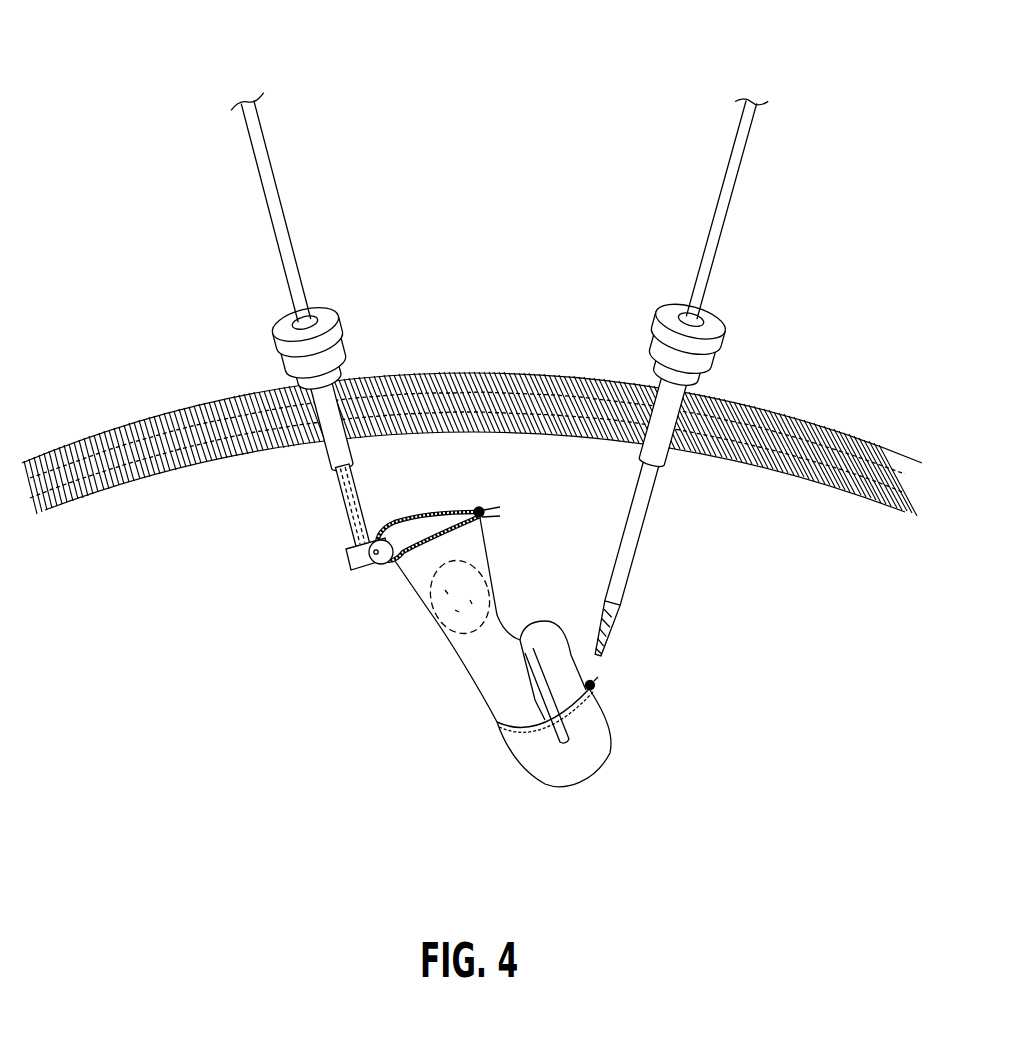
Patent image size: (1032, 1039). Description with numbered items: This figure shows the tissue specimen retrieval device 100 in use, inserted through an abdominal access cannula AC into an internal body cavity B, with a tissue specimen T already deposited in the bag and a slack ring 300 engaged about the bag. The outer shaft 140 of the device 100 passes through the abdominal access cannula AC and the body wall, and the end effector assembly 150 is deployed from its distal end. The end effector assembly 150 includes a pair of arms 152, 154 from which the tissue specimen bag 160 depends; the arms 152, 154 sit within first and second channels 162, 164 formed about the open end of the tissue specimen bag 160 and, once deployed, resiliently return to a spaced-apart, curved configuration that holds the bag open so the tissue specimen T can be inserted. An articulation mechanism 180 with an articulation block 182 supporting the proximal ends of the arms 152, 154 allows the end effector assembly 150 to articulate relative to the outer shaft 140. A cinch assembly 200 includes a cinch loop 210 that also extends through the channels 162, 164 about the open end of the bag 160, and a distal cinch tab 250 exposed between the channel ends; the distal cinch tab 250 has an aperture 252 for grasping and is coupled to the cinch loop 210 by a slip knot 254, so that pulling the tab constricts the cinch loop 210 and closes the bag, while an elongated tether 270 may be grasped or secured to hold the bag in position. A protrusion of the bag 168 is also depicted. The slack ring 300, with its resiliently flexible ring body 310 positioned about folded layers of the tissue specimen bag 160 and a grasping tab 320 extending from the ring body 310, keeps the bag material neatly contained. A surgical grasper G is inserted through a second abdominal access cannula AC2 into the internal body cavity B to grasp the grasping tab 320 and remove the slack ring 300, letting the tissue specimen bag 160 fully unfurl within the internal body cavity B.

The tissue specimen retrieval device 100 is at (287, 321).
The outer shaft 140 is at (300, 507).
The end effector assembly 150 is at (349, 574).
The arm 152 is at (336, 545).
The arm 154 is at (378, 483).
The tissue specimen bag 160 is at (463, 700).
The first channel 162 is at (493, 588).
The second channel 164 is at (420, 485).
The tissue protrusion 168 is at (557, 657).
The articulation mechanism 180 is at (329, 586).
The articulation block 182 is at (330, 567).
The cinch assembly 200 is at (475, 445).
The cinch loop 210 is at (435, 497).
The distal cinch tab 250 is at (523, 496).
The aperture 252 is at (525, 479).
The slip knot 254 is at (526, 518).
The elongated tether 270 is at (339, 615).
The slack ring 300 is at (596, 720).
The ring body 310 is at (640, 738).
The grasping tab 320 is at (632, 697).
The surgical grasper G is at (675, 375).
The abdominal access cannula AC is at (392, 340).
The second abdominal access cannula AC2 is at (763, 366).
The tissue specimen T is at (502, 652).
The internal body cavity B is at (267, 719).